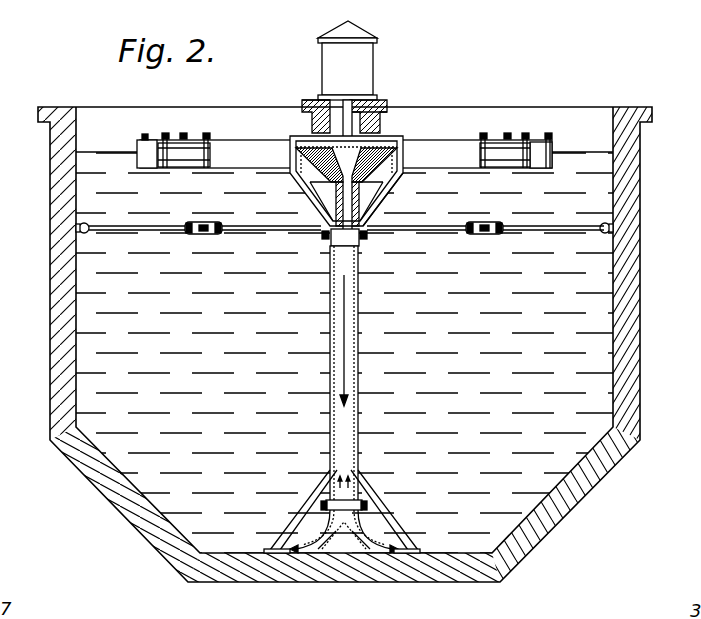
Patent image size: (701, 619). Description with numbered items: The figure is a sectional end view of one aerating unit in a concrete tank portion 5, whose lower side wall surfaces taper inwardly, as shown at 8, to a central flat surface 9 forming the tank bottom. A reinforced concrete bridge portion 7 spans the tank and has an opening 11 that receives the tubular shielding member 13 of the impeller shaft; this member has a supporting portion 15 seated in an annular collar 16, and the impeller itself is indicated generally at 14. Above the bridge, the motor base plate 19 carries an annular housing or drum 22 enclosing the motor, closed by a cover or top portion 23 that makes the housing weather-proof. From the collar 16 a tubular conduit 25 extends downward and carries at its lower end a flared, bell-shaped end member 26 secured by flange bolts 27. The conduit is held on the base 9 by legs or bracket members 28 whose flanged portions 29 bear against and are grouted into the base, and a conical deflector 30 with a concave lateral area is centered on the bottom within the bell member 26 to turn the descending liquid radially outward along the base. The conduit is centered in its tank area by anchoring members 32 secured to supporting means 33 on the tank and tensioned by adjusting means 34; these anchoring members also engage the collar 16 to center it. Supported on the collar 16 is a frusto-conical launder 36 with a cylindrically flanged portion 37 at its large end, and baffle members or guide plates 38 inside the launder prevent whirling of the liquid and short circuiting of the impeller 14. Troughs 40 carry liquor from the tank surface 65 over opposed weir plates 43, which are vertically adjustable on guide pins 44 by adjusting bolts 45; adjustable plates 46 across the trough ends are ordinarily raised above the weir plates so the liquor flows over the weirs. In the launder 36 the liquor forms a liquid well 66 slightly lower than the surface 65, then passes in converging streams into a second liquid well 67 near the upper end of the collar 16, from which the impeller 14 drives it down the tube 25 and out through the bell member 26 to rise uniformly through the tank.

The tank portion 5 is at (56, 164).
The bridge portion 7 is at (310, 100).
The tapered side wall surfaces 8 is at (112, 500).
The flat bottom surface 9 is at (385, 578).
The openings 11 is at (357, 118).
The tubular shielding member 13 is at (345, 116).
The impeller 14 is at (338, 240).
The supporting portion 15 is at (361, 219).
The annular collar 16 is at (333, 219).
The motor base plate 19 is at (318, 102).
The annular housing or drum 22 is at (330, 55).
The cover or top portion 23 is at (337, 33).
The tubular conduit 25 is at (330, 312).
The flared end member 26 is at (355, 522).
The flange bolts 27 is at (327, 486).
The legs or bracket members 28 is at (312, 517).
The flanged portions 29 is at (275, 548).
The deflector 30 is at (350, 543).
The anchoring members 32 is at (248, 232).
The supporting means 33 is at (90, 234).
The adjusting means 34 is at (203, 222).
The frusto-conical launder 36 is at (320, 190).
The cylindrically flanged portion 37 is at (288, 143).
The baffle members or guide plates 38 is at (325, 185).
The troughs 40 is at (253, 150).
The weir plates 43 is at (178, 163).
The guide pins 44 is at (486, 170).
The adjusting bolts 45 is at (207, 133).
The adjustable plates 46 is at (138, 167).
The liquid surface 65 is at (95, 150).
The liquid well 66 is at (382, 150).
The second liquid well 67 is at (375, 203).